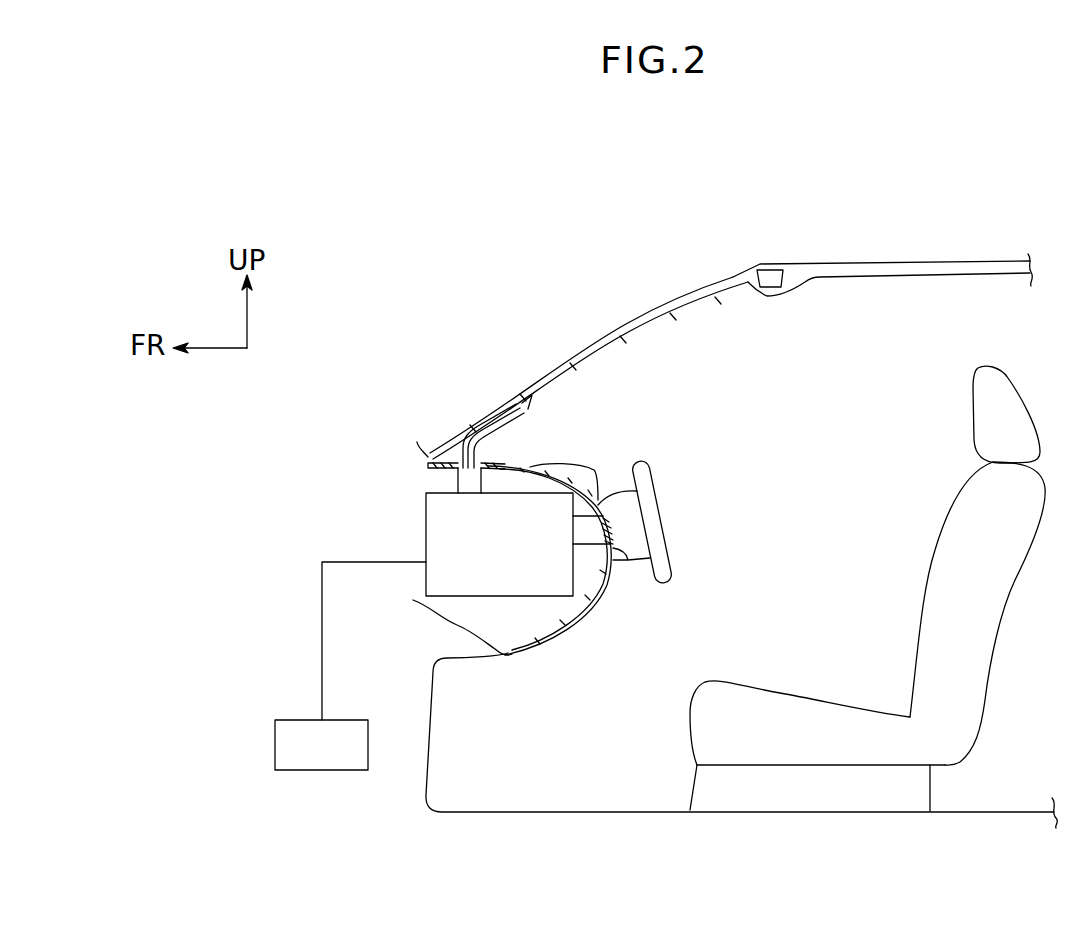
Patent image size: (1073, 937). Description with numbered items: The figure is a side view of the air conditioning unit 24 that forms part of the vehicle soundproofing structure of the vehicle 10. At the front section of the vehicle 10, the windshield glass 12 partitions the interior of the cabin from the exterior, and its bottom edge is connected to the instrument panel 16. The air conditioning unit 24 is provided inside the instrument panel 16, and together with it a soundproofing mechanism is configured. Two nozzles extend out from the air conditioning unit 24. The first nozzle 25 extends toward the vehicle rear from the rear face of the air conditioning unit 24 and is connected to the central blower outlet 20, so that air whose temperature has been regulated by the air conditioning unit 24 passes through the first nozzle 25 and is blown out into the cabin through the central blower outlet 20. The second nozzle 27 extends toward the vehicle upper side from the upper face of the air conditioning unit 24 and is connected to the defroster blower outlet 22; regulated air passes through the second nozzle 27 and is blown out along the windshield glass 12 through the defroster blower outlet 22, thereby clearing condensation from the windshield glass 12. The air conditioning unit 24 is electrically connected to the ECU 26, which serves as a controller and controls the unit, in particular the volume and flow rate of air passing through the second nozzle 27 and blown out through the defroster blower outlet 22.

The vehicle 10 is at (485, 276).
The windshield glass 12 is at (633, 318).
The instrument panel 16 is at (530, 467).
The central blower outlet 20 is at (613, 530).
The defroster blower outlet 22 is at (462, 455).
The air conditioning unit 24 is at (426, 545).
The first nozzle 25 is at (588, 545).
The Electronic Control Unit (ECU) 26 is at (297, 720).
The second nozzle 27 is at (447, 483).